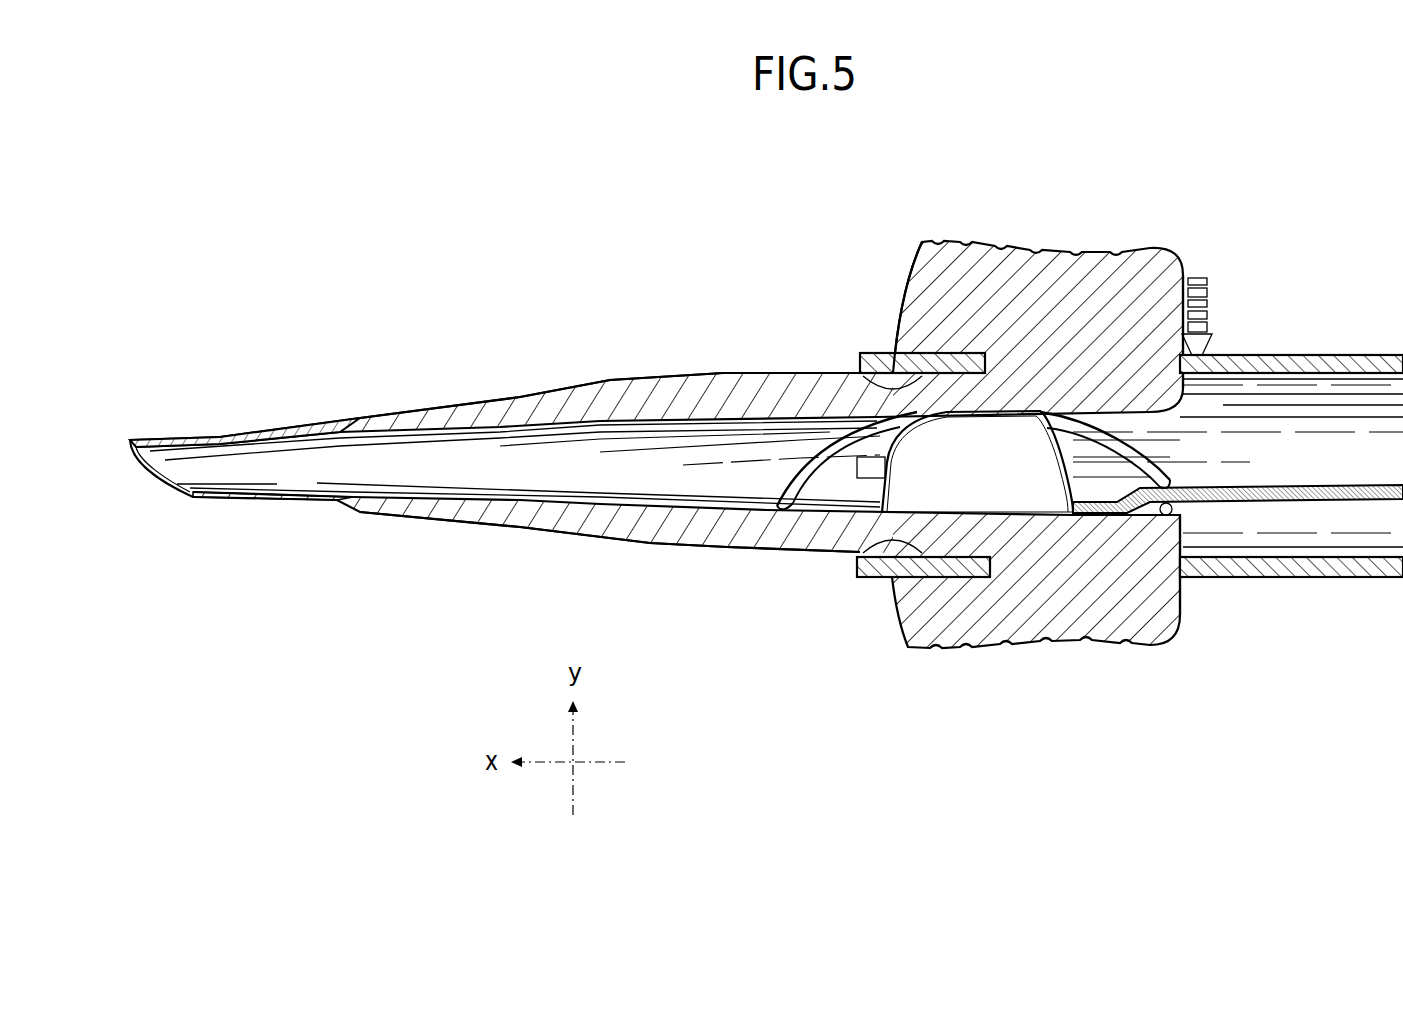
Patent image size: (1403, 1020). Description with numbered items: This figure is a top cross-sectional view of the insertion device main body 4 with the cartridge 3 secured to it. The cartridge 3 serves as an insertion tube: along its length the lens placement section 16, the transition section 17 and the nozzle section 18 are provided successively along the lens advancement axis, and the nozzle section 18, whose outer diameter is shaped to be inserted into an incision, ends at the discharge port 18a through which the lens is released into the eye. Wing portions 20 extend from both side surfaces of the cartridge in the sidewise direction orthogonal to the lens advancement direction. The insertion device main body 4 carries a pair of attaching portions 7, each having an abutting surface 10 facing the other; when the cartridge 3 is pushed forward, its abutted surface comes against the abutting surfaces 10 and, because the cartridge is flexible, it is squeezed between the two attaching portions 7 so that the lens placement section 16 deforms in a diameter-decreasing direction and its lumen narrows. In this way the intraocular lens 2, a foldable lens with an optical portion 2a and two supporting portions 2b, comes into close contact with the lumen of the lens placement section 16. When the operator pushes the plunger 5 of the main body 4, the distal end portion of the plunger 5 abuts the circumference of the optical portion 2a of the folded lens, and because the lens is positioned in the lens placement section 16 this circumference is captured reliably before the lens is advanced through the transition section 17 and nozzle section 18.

The intraocular lens 2 is at (876, 492).
The optical portion 2a is at (997, 492).
The supporting portion 2b is at (740, 505).
The cartridge 3 is at (611, 300).
The insertion device main body 4 is at (1327, 355).
The plunger 5 is at (1288, 502).
The attaching portion 7 is at (861, 362).
The abutting surface 10 is at (858, 374).
The lens placement section 16 is at (1142, 416).
The transition section 17 is at (540, 465).
The nozzle section 18 is at (227, 460).
The discharge port 18a is at (162, 483).
The wing portion 20 is at (1158, 282).